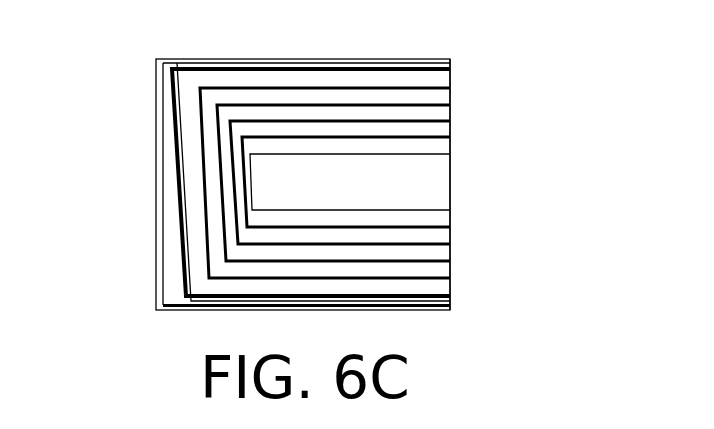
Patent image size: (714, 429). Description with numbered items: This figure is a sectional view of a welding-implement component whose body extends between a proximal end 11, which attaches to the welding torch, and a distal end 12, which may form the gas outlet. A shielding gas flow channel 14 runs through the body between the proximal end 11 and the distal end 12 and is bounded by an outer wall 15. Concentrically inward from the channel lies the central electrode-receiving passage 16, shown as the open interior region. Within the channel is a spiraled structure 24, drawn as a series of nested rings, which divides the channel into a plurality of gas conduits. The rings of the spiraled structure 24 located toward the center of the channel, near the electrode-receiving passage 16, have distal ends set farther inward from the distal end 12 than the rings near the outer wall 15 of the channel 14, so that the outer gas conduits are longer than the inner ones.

The proximal end 11 is at (434, 306).
The distal end 12 is at (154, 272).
The shielding gas flow channel 14 is at (203, 92).
The outer wall 15 is at (304, 66).
The electrode-receiving passage 16 is at (400, 192).
The spiraled structure 24 is at (437, 126).